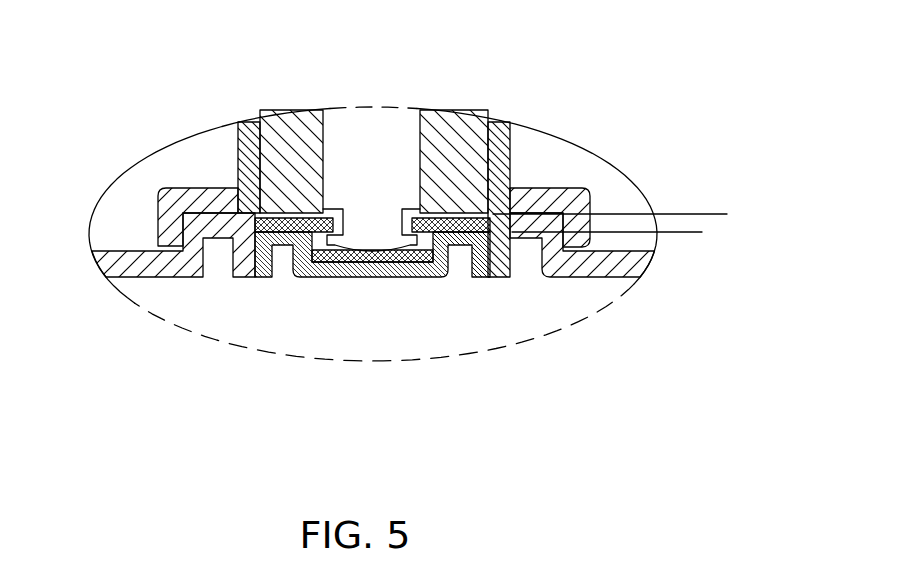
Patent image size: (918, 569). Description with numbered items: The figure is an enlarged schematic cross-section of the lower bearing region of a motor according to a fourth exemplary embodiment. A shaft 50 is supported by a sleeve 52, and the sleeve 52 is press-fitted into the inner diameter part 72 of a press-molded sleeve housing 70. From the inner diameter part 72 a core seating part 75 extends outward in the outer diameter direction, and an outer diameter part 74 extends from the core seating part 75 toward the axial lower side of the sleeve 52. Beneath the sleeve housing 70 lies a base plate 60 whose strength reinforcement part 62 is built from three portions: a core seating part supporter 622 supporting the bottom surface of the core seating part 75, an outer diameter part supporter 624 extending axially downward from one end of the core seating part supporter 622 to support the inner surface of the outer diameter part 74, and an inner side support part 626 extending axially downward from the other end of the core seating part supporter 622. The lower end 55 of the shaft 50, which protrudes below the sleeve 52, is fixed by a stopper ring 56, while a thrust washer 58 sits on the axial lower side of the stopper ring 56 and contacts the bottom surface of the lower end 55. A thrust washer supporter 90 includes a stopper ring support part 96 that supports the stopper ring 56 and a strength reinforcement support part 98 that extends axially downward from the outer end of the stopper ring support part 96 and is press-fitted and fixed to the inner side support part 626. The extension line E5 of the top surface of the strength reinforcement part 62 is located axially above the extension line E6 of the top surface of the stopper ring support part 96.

The shaft 50 is at (374, 133).
The sleeve 52 is at (292, 130).
The lower end 55 is at (373, 220).
The stopper ring 56 is at (493, 237).
The thrust washer 58 is at (345, 253).
The base plate 60 is at (118, 262).
The strength reinforcement part 62 is at (195, 360).
The core seating part supporter 622 is at (222, 228).
The outer diameter part supporter 624 is at (202, 260).
The inner side support part 626 is at (245, 257).
The sleeve housing 70 is at (166, 145).
The inner diameter part 72 is at (240, 148).
The outer diameter part 74 is at (131, 188).
The core seating part 75 is at (202, 190).
The thrust washer supporter 90 is at (378, 342).
The stopper ring support part 96 is at (455, 248).
The strength reinforcement support part 98 is at (478, 256).
The extension line of a top surface of the strength reinforcement part E5 is at (626, 213).
The extension line of a top surface of the stopper ring support part E6 is at (623, 237).